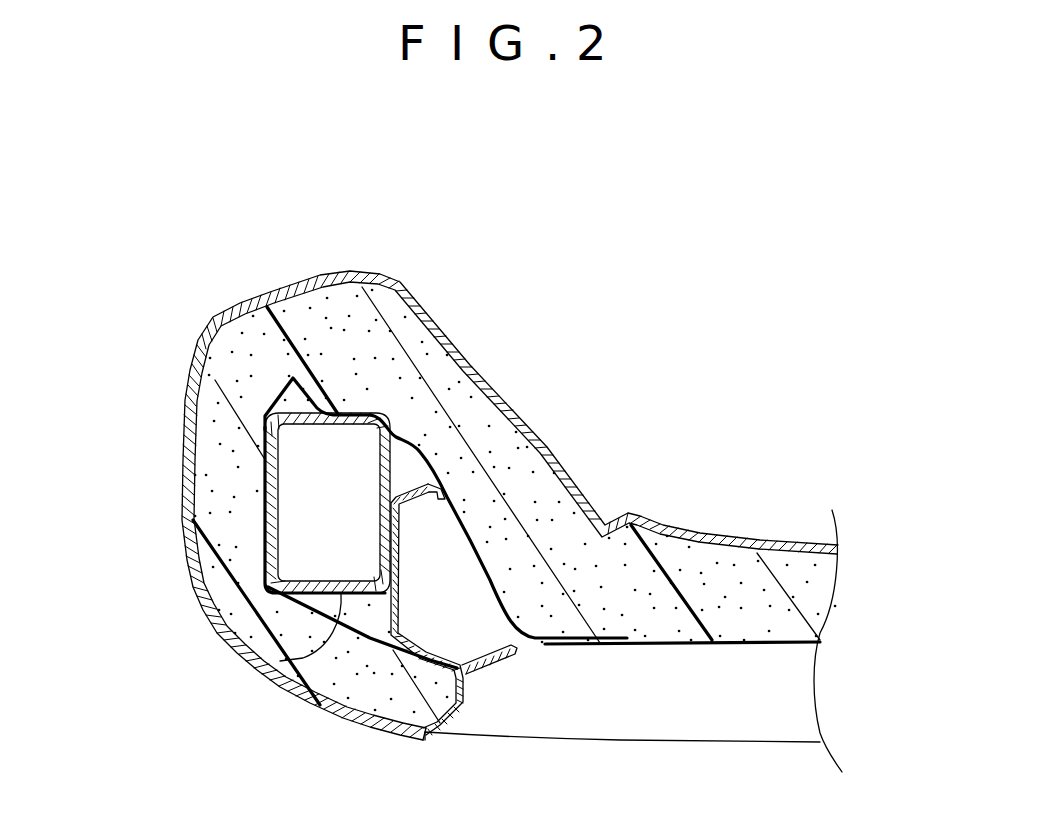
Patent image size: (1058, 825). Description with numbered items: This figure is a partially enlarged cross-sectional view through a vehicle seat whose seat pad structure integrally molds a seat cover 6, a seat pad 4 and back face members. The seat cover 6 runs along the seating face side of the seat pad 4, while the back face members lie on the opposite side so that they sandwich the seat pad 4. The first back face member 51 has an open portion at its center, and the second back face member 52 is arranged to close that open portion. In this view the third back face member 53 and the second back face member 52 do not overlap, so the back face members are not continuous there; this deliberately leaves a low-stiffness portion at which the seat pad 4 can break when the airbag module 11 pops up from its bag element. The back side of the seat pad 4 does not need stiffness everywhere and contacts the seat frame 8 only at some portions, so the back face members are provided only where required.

The seat pad 4 is at (731, 578).
The seat cover 6 is at (458, 332).
The seat frame 8 is at (487, 672).
The airbag module 11 is at (278, 661).
The first back face member 51 is at (477, 547).
The second back face member 52 is at (772, 645).
The third back face member 53 is at (263, 502).